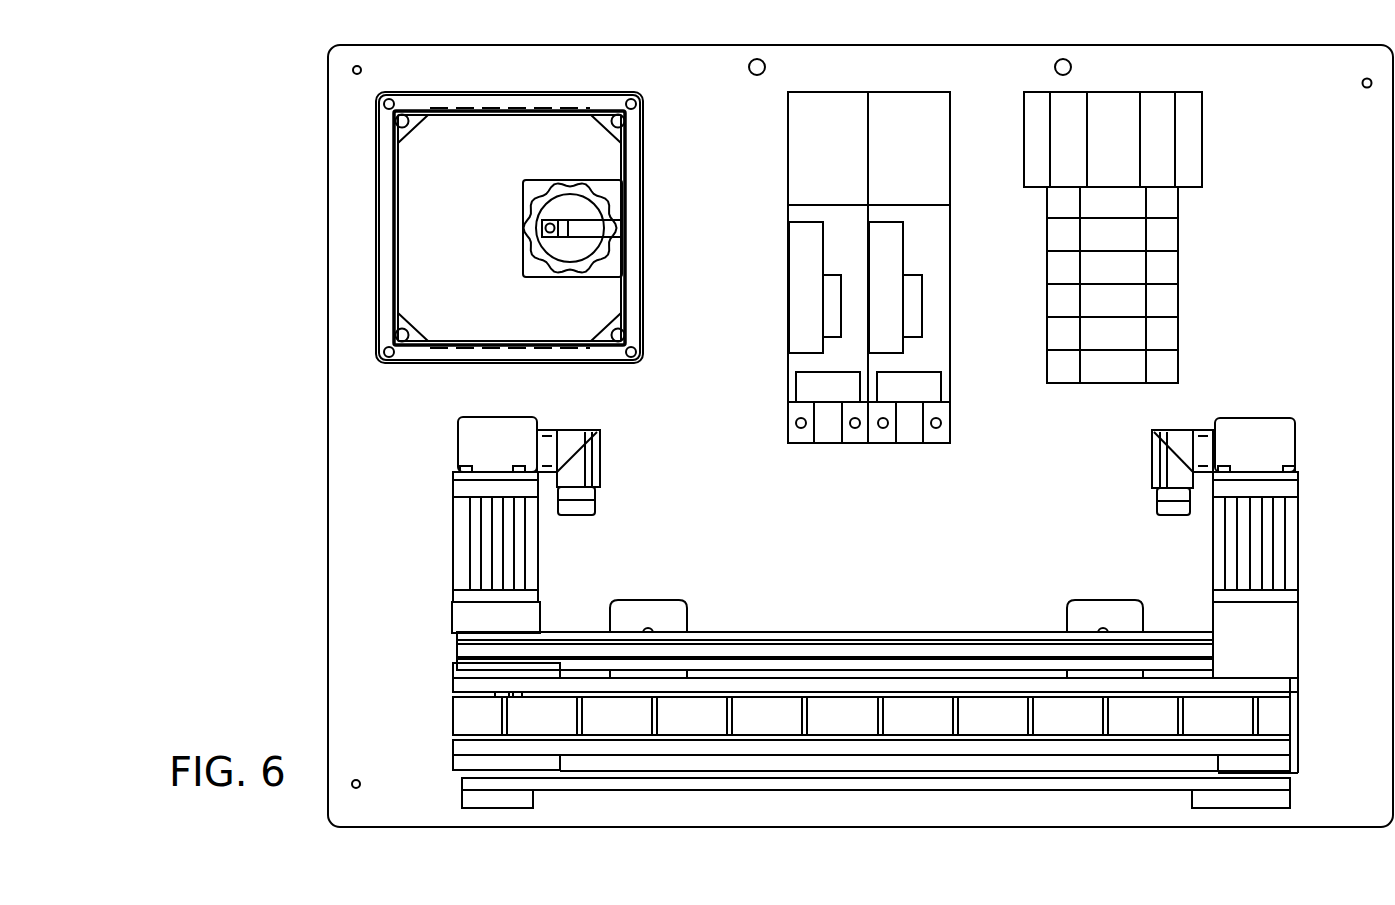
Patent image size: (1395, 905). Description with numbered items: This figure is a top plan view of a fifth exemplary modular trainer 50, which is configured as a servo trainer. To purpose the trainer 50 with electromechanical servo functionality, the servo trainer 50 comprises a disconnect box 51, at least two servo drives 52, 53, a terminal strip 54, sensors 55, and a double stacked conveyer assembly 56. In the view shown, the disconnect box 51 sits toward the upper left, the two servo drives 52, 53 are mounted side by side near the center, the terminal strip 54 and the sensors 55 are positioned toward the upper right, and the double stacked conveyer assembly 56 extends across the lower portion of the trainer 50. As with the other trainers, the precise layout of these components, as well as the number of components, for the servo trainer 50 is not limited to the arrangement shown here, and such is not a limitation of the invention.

The modular trainer 50 is at (284, 402).
The disconnect box 51 is at (512, 130).
The servo drive 52 is at (841, 252).
The servo drive 53 is at (922, 255).
The terminal strip 54 is at (1157, 141).
The sensors 55 is at (1160, 266).
The double stacked conveyer assembly 56 is at (840, 714).